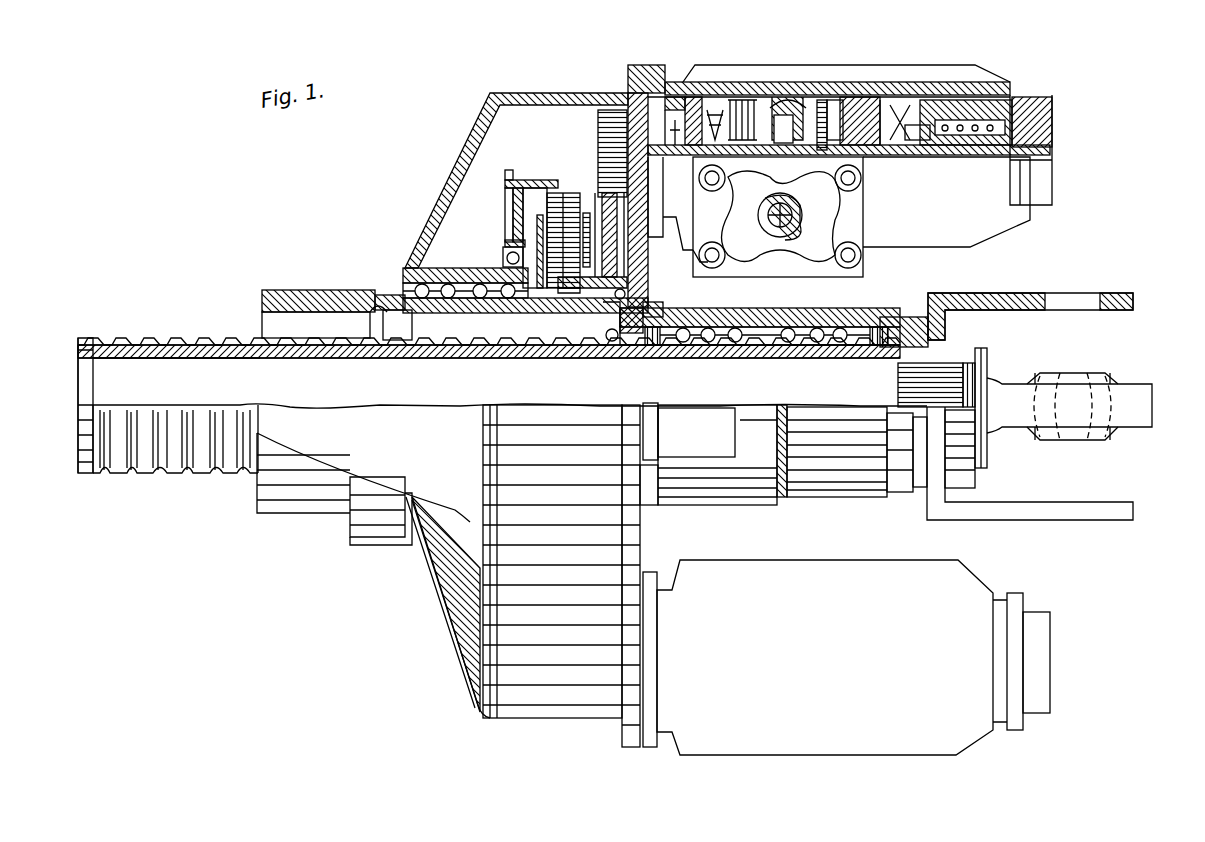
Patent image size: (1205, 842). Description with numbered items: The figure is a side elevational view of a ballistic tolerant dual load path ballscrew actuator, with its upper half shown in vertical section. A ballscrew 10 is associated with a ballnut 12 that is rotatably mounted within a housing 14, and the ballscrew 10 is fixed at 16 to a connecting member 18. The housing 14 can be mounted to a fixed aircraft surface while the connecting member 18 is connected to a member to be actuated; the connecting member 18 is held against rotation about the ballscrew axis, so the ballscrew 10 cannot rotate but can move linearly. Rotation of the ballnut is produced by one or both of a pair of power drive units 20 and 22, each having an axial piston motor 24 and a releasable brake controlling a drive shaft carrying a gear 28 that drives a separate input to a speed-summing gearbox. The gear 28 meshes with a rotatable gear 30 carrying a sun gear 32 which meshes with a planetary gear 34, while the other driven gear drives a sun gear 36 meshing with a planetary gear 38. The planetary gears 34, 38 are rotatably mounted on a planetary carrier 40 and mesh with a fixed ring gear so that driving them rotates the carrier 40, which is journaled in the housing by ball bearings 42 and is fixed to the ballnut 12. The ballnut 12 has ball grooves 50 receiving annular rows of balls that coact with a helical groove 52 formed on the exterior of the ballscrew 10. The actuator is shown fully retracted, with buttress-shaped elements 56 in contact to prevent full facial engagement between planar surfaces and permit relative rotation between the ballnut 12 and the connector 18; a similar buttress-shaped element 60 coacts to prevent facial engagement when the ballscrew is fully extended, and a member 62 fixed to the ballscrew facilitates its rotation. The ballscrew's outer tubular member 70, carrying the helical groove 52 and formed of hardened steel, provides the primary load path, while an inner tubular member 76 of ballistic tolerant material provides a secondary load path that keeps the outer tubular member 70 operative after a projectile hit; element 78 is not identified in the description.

The ballscrew 10 is at (194, 309).
The ballnut 12 is at (740, 310).
The housing 14 is at (535, 93).
The fixing point 16 is at (750, 100).
The connecting member 18 is at (1130, 390).
The power drive unit 20 is at (932, 65).
The power drive unit 22 is at (960, 600).
The axial piston motor 24 is at (985, 100).
The gear 28 is at (614, 108).
The rotatable gear 30 is at (592, 200).
The sun gear 32 is at (577, 280).
The planetary gear 34 is at (560, 200).
The sun gear 36 is at (555, 280).
The planetary gear 38 is at (545, 218).
The planetary carrier 40 is at (537, 232).
The ball bearings 42 is at (392, 290).
The ball grooves 50 is at (820, 330).
The helical groove 52 is at (240, 338).
The buttress-shaped elements 56 is at (920, 340).
The buttress-shaped element 60 is at (610, 338).
The member 62 is at (1030, 293).
The outer tubular member 70 is at (190, 445).
The inner tubular member 76 is at (138, 360).
The end cap 78 is at (78, 345).